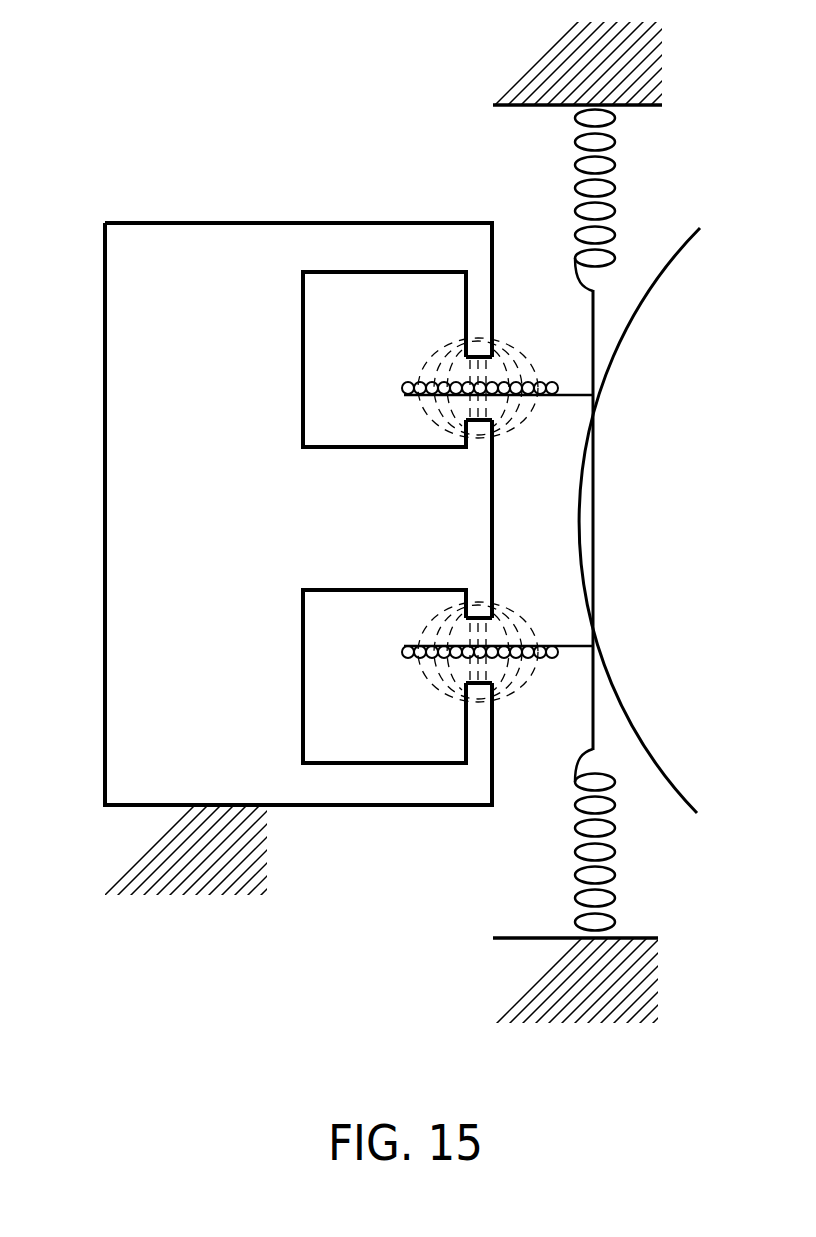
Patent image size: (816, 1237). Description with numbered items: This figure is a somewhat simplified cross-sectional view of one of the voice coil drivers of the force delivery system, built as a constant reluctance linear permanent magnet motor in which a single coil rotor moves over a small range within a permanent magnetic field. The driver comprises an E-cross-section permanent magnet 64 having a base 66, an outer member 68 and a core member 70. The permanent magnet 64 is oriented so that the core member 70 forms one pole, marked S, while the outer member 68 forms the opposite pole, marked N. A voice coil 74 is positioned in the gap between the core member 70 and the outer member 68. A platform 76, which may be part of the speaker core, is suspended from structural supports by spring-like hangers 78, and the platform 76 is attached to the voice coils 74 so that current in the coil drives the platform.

The permanent magnet 64 is at (367, 807).
The base 66 is at (104, 487).
The outer member 68 is at (363, 223).
The core member 70 is at (323, 447).
The voice coil 74 is at (505, 395).
The platform 76 is at (657, 762).
The spring-like hangers 78 is at (613, 185).